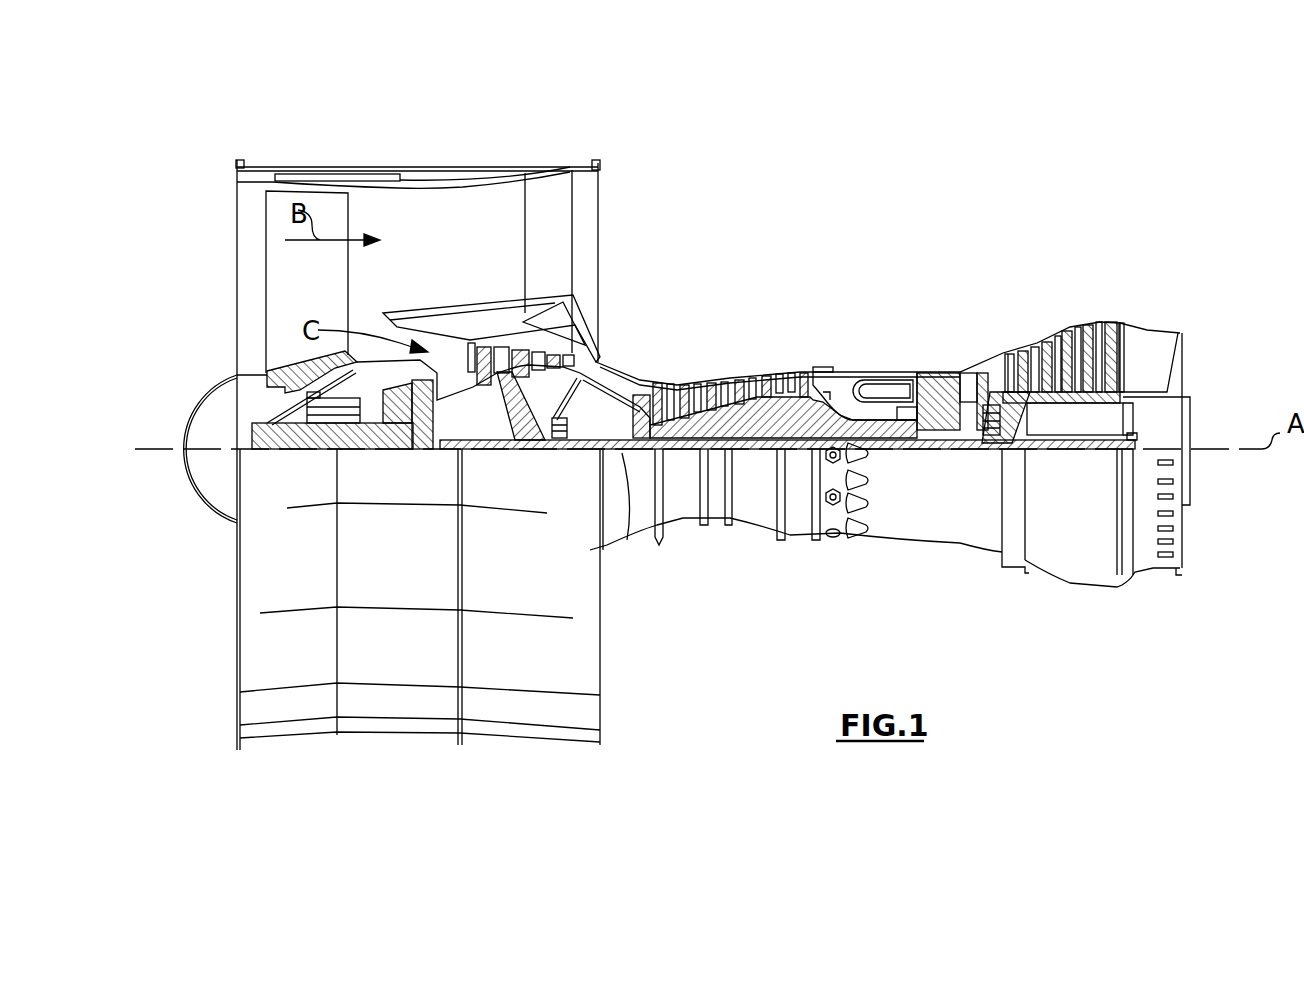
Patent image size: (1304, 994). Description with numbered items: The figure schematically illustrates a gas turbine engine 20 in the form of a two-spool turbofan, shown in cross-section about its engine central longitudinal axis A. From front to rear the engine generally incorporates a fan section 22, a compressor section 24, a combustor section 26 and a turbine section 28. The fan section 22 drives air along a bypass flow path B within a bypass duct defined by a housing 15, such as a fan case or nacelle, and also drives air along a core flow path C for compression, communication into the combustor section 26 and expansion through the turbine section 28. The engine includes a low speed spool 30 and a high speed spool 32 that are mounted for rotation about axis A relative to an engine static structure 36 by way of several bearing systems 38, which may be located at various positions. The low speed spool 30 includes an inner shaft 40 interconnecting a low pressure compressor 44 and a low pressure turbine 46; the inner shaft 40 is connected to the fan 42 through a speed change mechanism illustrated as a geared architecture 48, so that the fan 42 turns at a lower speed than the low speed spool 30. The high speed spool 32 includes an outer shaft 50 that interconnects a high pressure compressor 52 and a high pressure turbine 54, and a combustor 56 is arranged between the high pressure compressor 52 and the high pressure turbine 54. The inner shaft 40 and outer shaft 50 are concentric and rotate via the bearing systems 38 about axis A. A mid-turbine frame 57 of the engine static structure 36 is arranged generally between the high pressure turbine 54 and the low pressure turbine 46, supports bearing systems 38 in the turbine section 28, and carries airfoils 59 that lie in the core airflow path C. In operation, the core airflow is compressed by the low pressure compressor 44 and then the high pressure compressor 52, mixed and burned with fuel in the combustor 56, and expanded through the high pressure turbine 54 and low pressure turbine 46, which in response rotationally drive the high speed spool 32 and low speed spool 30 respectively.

The housing 15 is at (418, 170).
The gas turbine engine 20 is at (876, 219).
The fan section 22 is at (349, 162).
The compressor section 24 is at (647, 359).
The combustor section 26 is at (873, 350).
The turbine section 28 is at (1020, 312).
The low speed spool 30 is at (757, 452).
The high speed spool 32 is at (803, 392).
The engine static structure 36 is at (800, 540).
The bearing systems 38 is at (557, 440).
The inner shaft 40 is at (623, 533).
The fan 42 is at (320, 294).
The low pressure compressor 44 is at (512, 357).
The low pressure turbine 46 is at (1063, 340).
The geared architecture 48 is at (423, 440).
The outer shaft 50 is at (880, 440).
The high pressure compressor 52 is at (733, 417).
The high pressure turbine 54 is at (942, 372).
The combustor 56 is at (872, 390).
The mid-turbine frame 57 is at (981, 359).
The airfoils 59 is at (1013, 413).